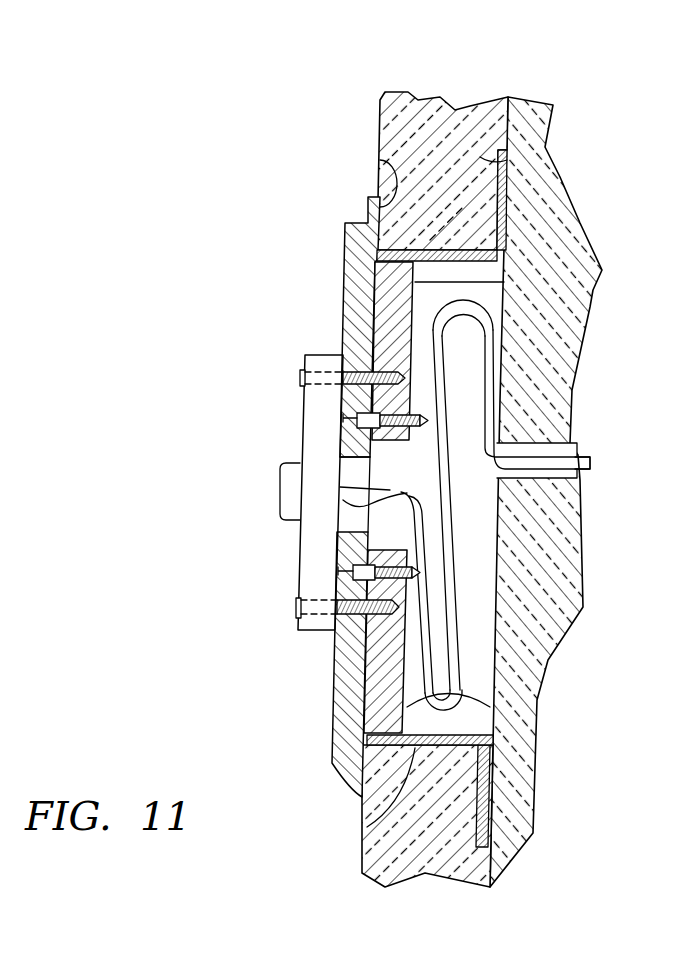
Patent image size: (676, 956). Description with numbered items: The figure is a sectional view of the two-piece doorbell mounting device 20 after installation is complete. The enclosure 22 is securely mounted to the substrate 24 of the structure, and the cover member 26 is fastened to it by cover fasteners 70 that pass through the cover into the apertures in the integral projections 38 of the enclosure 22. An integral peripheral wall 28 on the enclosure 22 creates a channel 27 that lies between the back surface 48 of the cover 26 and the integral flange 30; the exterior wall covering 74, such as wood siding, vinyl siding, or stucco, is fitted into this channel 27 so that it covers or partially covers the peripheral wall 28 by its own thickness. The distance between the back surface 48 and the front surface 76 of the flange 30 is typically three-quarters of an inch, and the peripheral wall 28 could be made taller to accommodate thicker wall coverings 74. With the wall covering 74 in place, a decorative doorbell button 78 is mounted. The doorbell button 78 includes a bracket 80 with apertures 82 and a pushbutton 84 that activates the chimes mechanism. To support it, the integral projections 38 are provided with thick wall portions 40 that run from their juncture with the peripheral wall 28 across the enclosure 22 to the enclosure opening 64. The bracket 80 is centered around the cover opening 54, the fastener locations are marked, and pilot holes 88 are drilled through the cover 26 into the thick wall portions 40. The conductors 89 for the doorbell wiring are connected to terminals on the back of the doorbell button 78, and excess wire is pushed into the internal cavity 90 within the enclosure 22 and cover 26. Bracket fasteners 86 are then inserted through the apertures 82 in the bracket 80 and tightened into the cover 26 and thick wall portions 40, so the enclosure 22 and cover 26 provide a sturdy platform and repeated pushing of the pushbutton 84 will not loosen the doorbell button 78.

The two-piece doorbell mounting device 20 is at (292, 222).
The enclosure 22 is at (393, 298).
The substrate 24 is at (552, 107).
The cover member 26 is at (336, 752).
The channel 27 is at (445, 222).
The peripheral wall 28 is at (361, 824).
The integral flange 30 is at (510, 167).
The integral projections 38 is at (482, 281).
The thick wall portions 40 is at (482, 298).
The back surface 48 is at (379, 162).
The cover opening 54 is at (345, 507).
The enclosure opening 64 is at (343, 450).
The cover fasteners 70 is at (430, 414).
The exterior wall covering 74 is at (361, 857).
The front surface 76 is at (494, 158).
The doorbell button 78 is at (255, 433).
The bracket 80 is at (314, 563).
The bracket apertures 82 is at (320, 370).
The pushbutton 84 is at (288, 470).
The bracket fasteners 86 is at (405, 378).
The pilot holes 88 is at (338, 646).
The conductors 89 is at (420, 493).
The internal cavity 90 is at (505, 453).